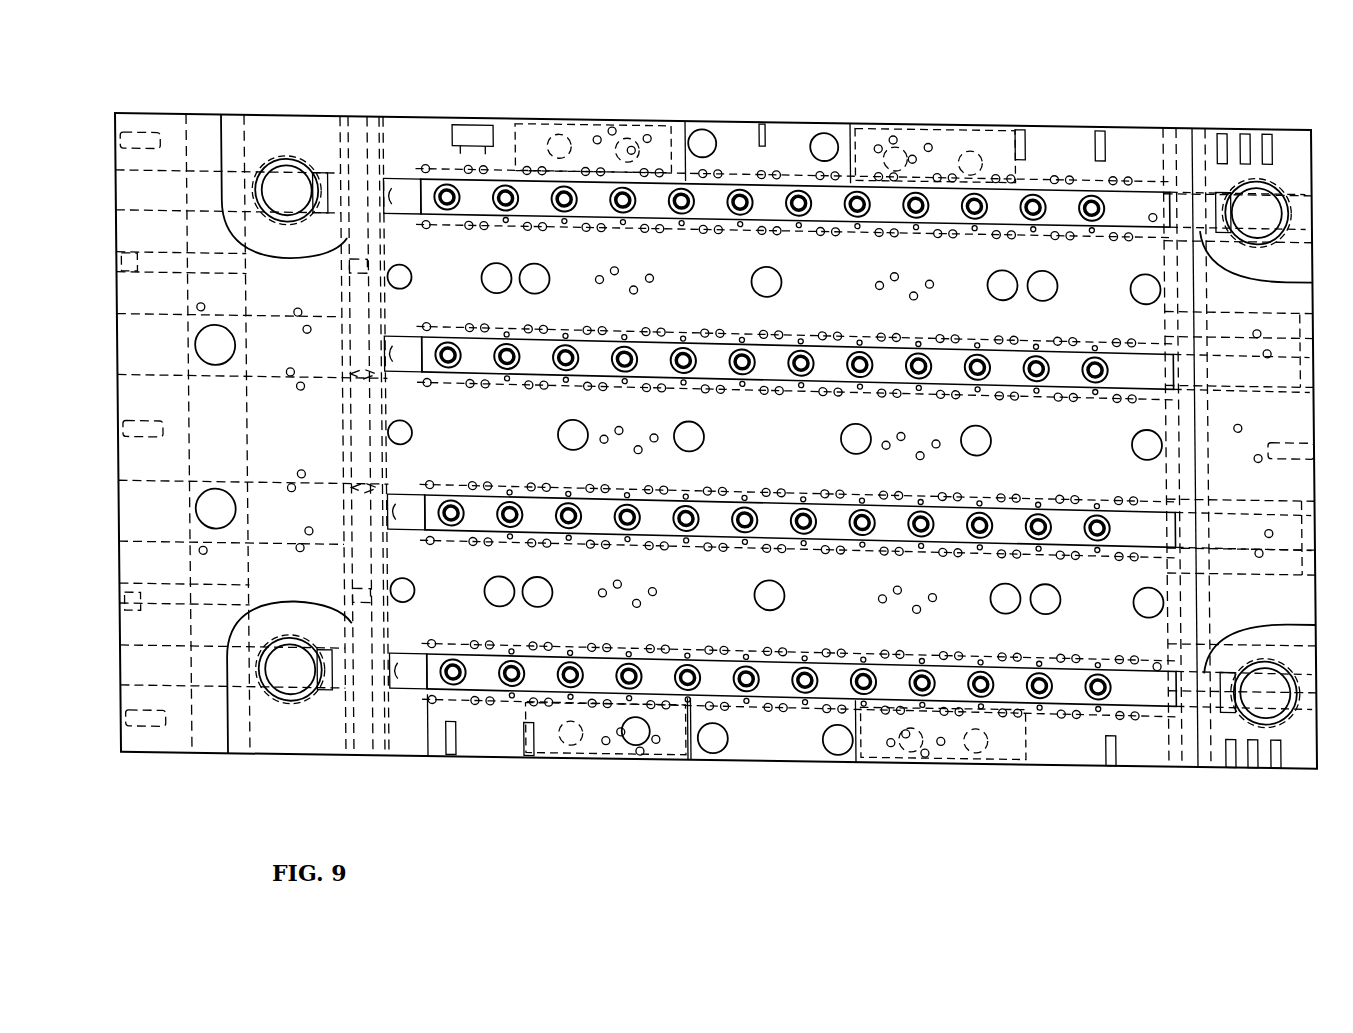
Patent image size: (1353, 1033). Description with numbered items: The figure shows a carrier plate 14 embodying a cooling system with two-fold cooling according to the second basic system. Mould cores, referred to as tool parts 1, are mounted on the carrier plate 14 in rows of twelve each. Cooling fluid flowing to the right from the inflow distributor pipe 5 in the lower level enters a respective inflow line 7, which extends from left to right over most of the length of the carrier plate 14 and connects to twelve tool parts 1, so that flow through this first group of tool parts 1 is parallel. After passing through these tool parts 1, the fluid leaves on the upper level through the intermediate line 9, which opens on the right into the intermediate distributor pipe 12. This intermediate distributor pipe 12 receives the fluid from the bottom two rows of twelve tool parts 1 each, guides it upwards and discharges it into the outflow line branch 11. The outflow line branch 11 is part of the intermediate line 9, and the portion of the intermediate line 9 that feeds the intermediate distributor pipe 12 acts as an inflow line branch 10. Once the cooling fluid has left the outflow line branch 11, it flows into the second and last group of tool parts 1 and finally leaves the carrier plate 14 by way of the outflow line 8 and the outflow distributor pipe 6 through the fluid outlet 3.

The tool parts 1 is at (453, 687).
The fluid outlet 3 is at (152, 352).
The inflow distributor pipe 5 is at (377, 720).
The outflow distributor pipe 6 is at (345, 300).
The inflow line 7 is at (662, 657).
The outflow line 8 is at (406, 203).
The intermediate line 9 is at (892, 678).
The inflow line branch 10 is at (802, 464).
The outflow line branch 11 is at (840, 345).
The intermediate distributor pipe 12 is at (1192, 467).
The carrier plate 14 is at (1297, 258).